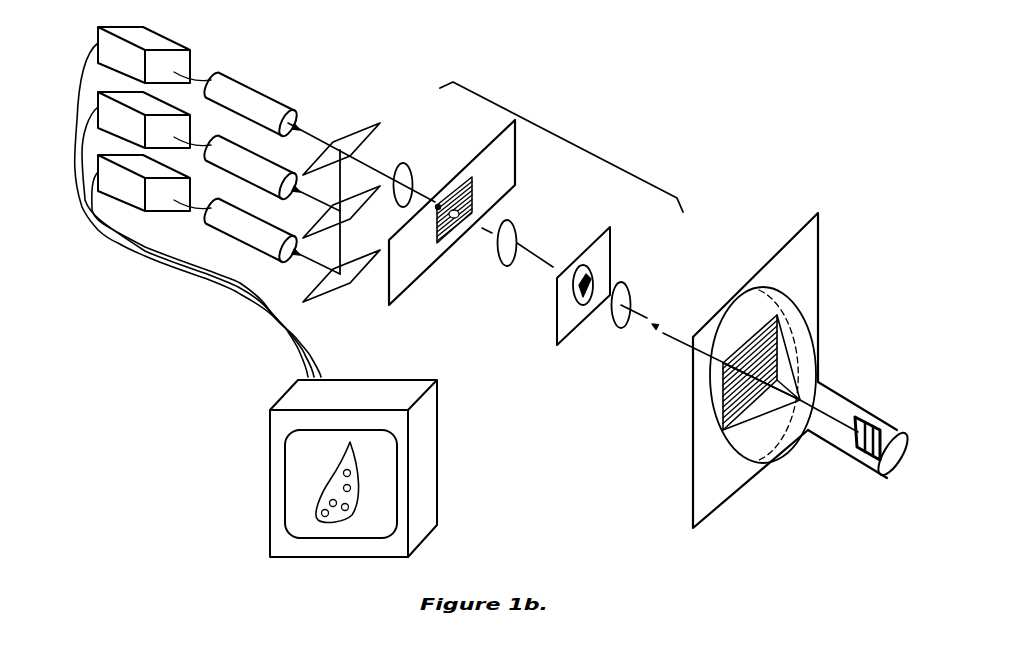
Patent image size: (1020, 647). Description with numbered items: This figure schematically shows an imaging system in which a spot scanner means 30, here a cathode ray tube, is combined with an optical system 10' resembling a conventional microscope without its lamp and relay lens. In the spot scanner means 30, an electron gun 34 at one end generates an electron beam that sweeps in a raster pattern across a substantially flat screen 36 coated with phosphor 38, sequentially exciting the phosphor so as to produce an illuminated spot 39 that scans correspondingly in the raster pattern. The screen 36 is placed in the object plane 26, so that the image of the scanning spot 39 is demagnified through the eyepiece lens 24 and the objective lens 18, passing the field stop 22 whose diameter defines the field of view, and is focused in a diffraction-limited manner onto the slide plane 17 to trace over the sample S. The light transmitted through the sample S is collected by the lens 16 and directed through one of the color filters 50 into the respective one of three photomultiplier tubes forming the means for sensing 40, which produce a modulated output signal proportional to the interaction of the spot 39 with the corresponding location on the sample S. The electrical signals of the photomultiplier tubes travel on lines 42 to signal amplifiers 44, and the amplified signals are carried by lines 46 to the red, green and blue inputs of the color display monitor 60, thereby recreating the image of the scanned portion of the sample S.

The optical system 10' is at (561, 147).
The condenser lens 16 is at (405, 163).
The slide plane 17 is at (408, 267).
The objective lens 18 is at (510, 242).
The field stop 22 is at (582, 308).
The eyepiece lens 24 is at (622, 303).
The object plane 26 is at (710, 482).
The spot scanner means 30 is at (840, 300).
The electron gun 34 is at (860, 453).
The screen 36 is at (752, 308).
The phosphor 38 is at (723, 430).
The spot 39 is at (438, 202).
The means for sensing 40 is at (238, 109).
The lines 42 is at (202, 78).
The signal amplifiers 44 is at (113, 62).
The lines 46 is at (234, 284).
The color filters 50 is at (367, 137).
The color display monitor 60 is at (422, 475).
The sample S is at (450, 240).